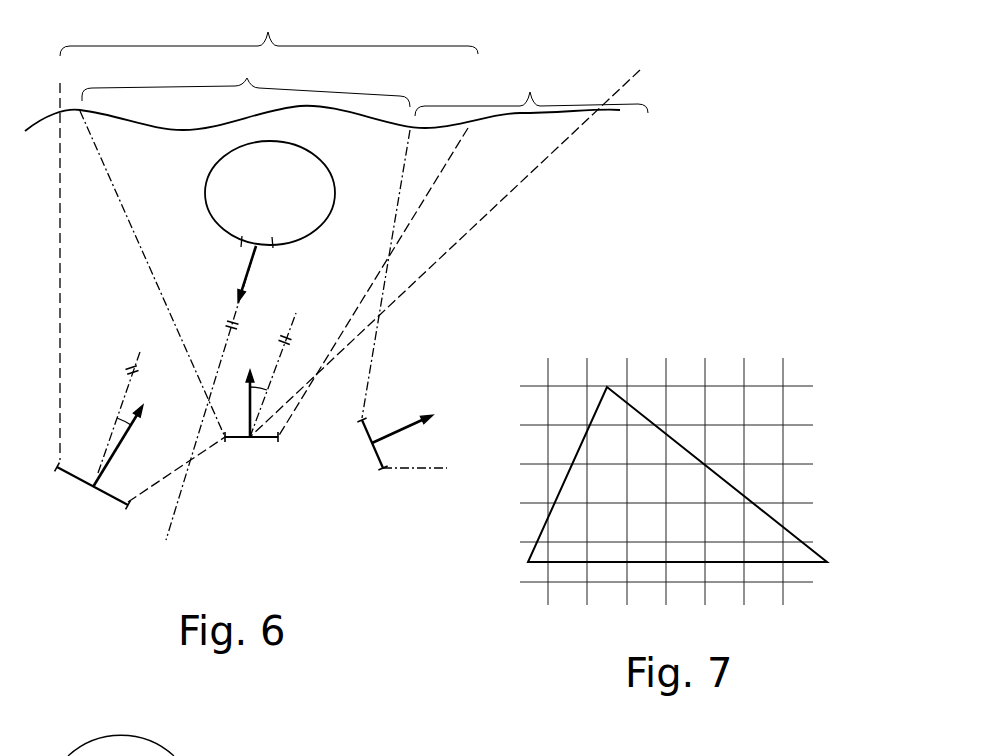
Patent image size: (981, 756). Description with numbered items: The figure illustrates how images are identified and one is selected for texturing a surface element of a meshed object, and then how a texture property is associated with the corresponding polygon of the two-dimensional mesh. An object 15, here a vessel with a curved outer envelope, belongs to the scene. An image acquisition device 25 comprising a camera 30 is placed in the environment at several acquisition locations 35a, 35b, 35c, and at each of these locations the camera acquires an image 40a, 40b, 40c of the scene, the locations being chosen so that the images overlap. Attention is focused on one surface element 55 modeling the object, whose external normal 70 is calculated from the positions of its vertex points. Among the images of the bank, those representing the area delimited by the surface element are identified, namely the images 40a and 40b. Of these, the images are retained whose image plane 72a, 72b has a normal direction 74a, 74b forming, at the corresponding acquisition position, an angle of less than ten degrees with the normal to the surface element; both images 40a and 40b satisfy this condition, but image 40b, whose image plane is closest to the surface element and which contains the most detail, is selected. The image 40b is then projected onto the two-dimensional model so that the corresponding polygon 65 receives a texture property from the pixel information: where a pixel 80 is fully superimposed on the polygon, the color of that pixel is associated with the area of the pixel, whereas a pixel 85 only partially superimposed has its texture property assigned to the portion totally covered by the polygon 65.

In FIG. 6, the image 40a is at (269, 29).
In FIG. 6, the image 40b is at (246, 79).
In FIG. 6, the image 40c is at (531, 89).
In FIG. 6, the object 15 is at (310, 168).
In FIG. 6, the normal of the surface element 70 is at (247, 265).
In FIG. 6, the surface element 55 is at (263, 250).
In FIG. 6, the image acquisition device 25 is at (60, 468).
In FIG. 6, the image plane 72a is at (85, 488).
In FIG. 6, the acquisition location 35a is at (93, 494).
In FIG. 6, the camera 30 is at (115, 510).
In FIG. 6, the normal direction 74a is at (127, 434).
In FIG. 6, the image plane 72b is at (233, 441).
In FIG. 6, the normal direction 74b is at (250, 380).
In FIG. 6, the acquisition location 35b is at (260, 440).
In FIG. 6, the acquisition location 35c is at (377, 457).
In FIG. 7, the pixel 85 is at (614, 406).
In FIG. 7, the polygon 65 is at (558, 483).
In FIG. 7, the pixel 80 is at (722, 533).